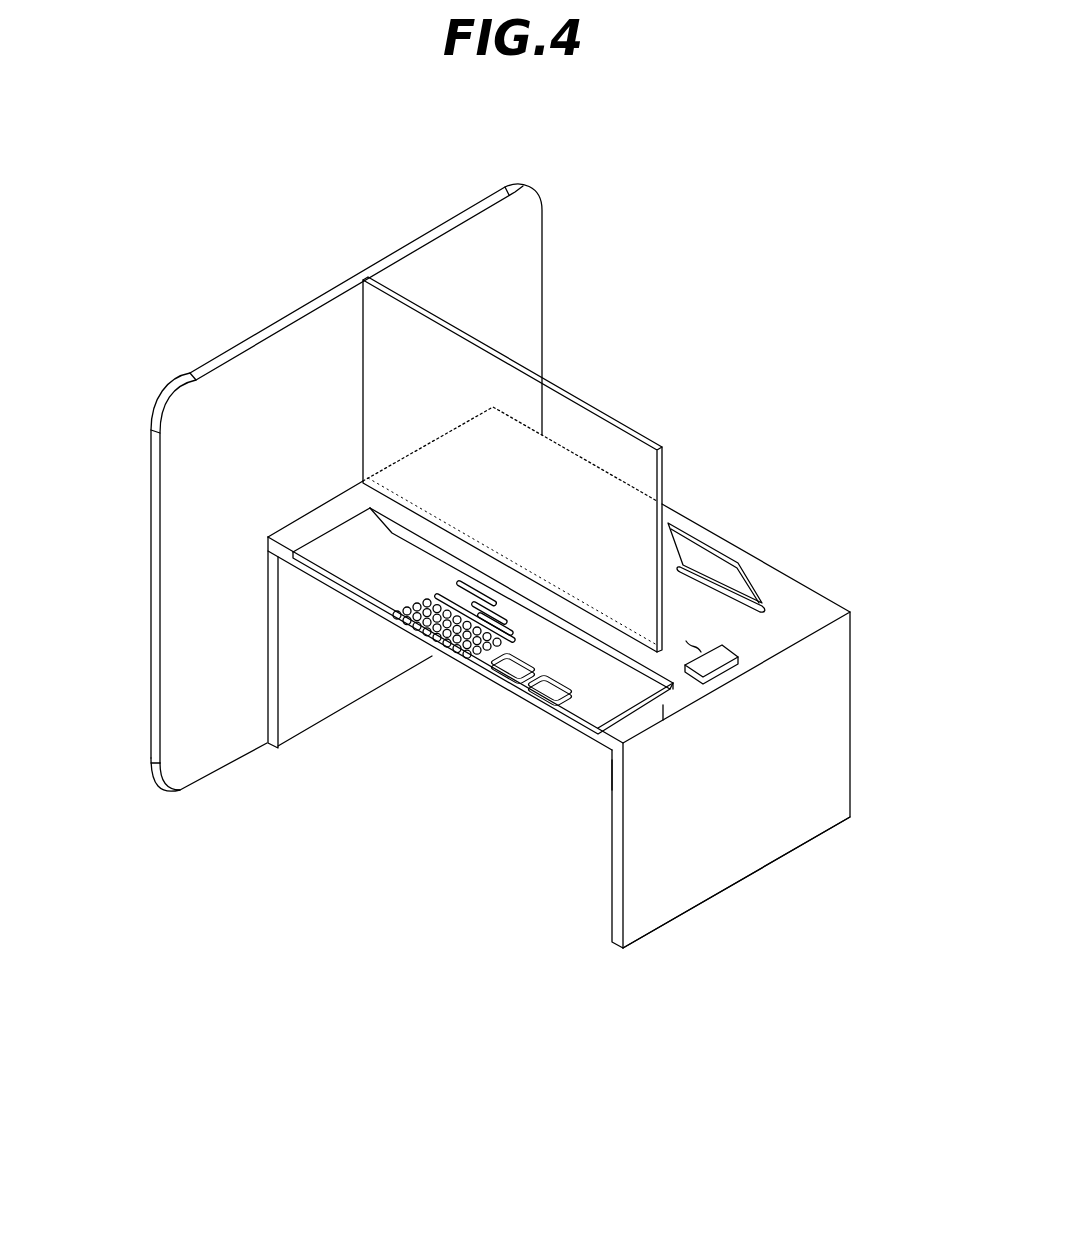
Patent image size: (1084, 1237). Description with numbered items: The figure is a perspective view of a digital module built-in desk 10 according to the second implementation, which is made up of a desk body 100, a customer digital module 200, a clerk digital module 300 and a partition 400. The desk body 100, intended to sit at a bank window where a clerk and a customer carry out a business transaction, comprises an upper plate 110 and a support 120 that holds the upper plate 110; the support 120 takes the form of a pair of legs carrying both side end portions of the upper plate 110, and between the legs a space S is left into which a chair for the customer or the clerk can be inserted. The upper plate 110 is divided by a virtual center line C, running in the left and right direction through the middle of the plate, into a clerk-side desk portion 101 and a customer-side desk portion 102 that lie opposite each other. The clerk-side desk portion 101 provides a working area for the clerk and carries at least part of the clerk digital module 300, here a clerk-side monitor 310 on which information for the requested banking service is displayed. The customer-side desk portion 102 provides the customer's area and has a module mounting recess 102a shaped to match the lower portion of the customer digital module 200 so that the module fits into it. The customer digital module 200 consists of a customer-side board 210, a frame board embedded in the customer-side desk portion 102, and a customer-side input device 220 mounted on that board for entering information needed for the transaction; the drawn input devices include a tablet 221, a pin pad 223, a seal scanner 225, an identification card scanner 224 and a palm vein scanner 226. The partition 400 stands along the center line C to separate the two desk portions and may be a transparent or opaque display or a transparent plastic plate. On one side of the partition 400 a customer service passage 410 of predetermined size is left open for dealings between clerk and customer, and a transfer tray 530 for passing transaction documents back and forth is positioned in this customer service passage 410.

The digital module built-in desk 10 is at (624, 162).
The desk body 100 is at (825, 1001).
The upper plate 110 is at (845, 947).
The clerk-side desk portion 101 is at (757, 657).
The customer-side desk portion 102 is at (663, 705).
The module mounting recess 102a is at (317, 542).
The support 120 is at (663, 905).
The customer digital module 200 is at (552, 858).
The customer-side board 210 is at (580, 733).
The customer-side input device 220 is at (487, 808).
The tablet 221 is at (405, 620).
The pin pad 223 is at (505, 672).
The seal scanner 225 is at (520, 690).
The identification card scanner 224 is at (547, 698).
The palm vein scanner 226 is at (563, 700).
The clerk digital module 300 is at (800, 570).
The clerk-side monitor 310 is at (710, 562).
The partition 400 is at (620, 427).
The customer service passage 410 is at (686, 641).
The transfer tray 530 is at (705, 650).
The center line C is at (663, 720).
The space S is at (594, 817).